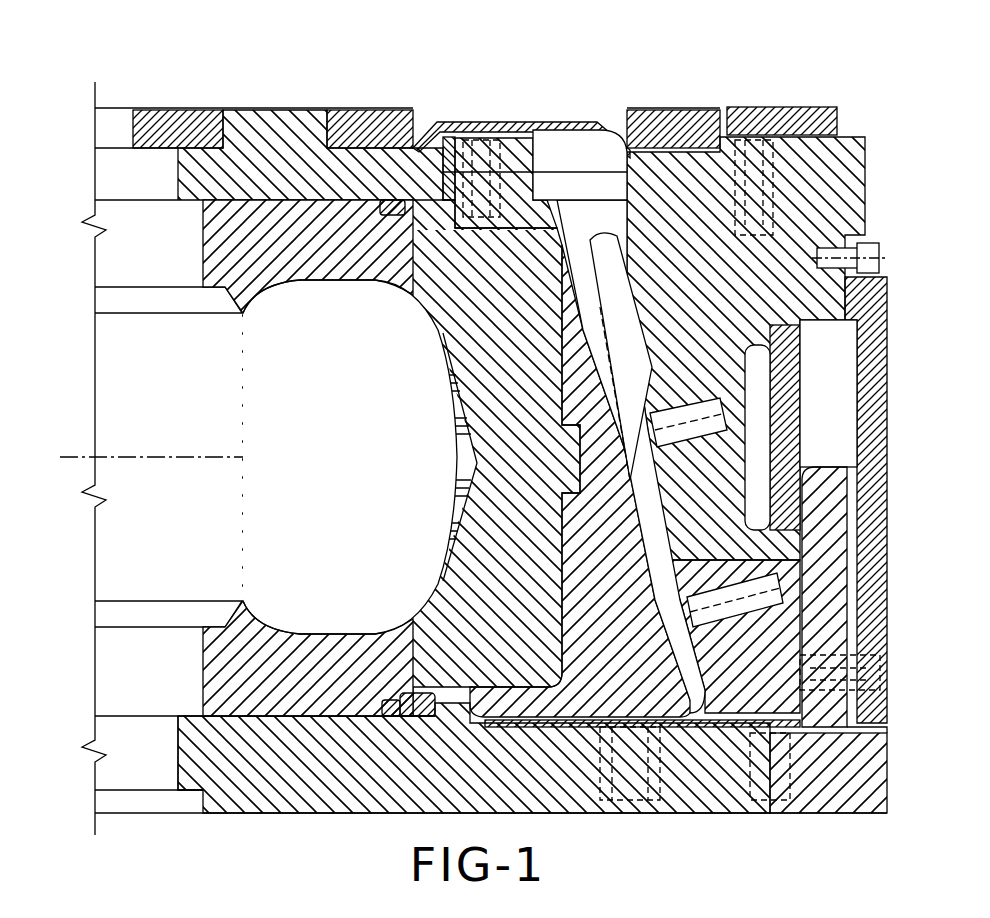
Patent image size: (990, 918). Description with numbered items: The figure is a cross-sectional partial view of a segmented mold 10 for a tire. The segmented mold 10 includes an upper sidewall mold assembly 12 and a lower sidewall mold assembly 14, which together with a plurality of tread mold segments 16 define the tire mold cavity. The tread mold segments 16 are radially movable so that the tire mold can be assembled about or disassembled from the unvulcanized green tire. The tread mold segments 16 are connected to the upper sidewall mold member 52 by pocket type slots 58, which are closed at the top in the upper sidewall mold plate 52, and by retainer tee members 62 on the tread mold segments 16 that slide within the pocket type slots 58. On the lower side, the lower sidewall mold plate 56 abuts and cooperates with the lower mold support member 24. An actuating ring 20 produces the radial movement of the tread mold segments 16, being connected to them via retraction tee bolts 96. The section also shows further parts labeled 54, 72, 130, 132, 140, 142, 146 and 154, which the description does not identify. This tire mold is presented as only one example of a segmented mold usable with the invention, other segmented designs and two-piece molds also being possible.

The segmented mold 10 is at (897, 106).
The upper sidewall mold assembly 12 is at (263, 135).
The lower sidewall mold assembly 14 is at (160, 758).
The tread mold segments 16 is at (472, 508).
The actuating ring 20 is at (824, 177).
The lower mold support member 24 is at (215, 745).
The upper sidewall mold member 52 is at (290, 257).
The upper seal 54 is at (200, 182).
The lower sidewall mold plate 56 is at (305, 630).
The pocket type slots 58 is at (565, 163).
The retainer tee members 62 is at (470, 160).
The grease fitting 72 is at (863, 298).
The retraction tee bolts 96 is at (680, 490).
The retainer block 130 is at (523, 120).
The lower plate 132 is at (838, 616).
The actuator plate 140 is at (838, 485).
The end block 142 is at (836, 787).
The bore 146 is at (880, 655).
The upper plate 154 is at (440, 120).